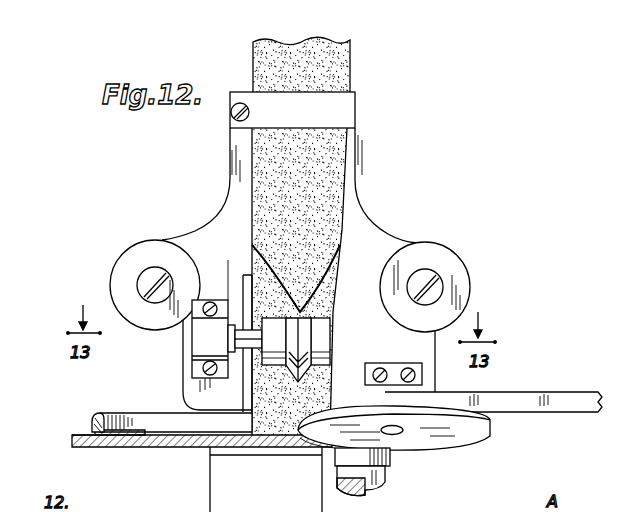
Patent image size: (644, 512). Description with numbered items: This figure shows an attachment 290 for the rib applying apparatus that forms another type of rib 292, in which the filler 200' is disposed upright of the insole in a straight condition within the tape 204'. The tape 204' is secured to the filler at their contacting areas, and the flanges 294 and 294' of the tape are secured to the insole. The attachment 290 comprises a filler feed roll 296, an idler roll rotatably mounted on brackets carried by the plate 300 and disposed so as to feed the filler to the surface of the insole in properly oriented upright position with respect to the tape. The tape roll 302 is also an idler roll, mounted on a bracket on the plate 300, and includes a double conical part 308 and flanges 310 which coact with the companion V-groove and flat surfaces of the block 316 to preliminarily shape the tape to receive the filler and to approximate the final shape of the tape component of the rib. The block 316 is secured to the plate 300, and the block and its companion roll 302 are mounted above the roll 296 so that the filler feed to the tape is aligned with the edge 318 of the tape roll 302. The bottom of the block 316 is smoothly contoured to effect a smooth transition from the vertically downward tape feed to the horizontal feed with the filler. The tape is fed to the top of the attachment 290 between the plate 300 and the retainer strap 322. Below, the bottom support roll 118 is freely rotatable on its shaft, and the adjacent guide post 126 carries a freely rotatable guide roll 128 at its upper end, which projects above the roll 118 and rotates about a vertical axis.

The tape 204' is at (225, 257).
The retainer strap 322 is at (350, 106).
The attachment 290 is at (198, 215).
The plate 300 is at (376, 232).
The block 316 is at (215, 290).
The edge 318 is at (228, 262).
The tape roll 302 is at (275, 338).
The double conical part 308 is at (306, 322).
The flanges 310 is at (318, 338).
The filler 200' is at (337, 426).
The filler feed roll 296 is at (442, 438).
The guide roll 128 is at (390, 458).
The guide post 126 is at (388, 478).
The bottom support roll 118 is at (222, 484).
The flange 294' is at (173, 403).
The rib 292 is at (97, 416).
The flange 294 is at (62, 421).